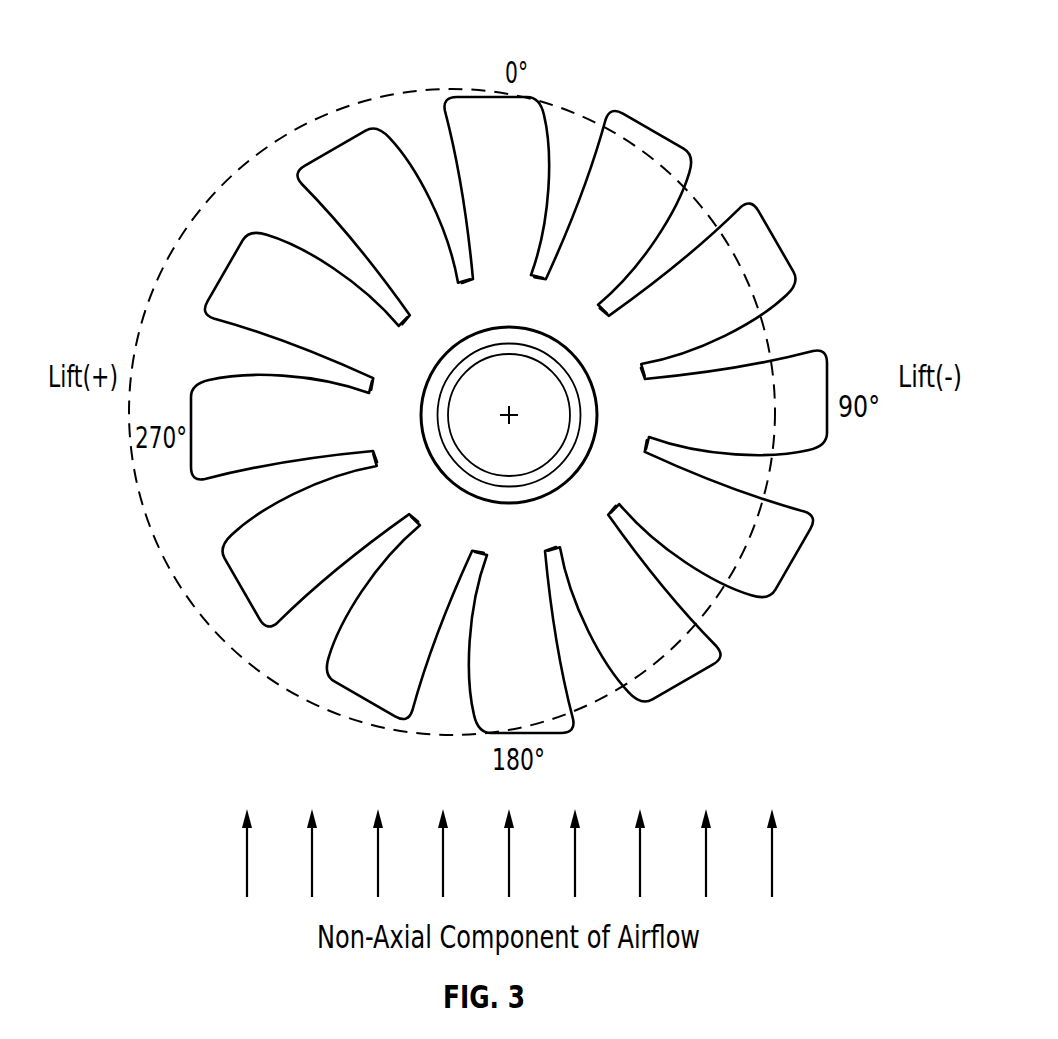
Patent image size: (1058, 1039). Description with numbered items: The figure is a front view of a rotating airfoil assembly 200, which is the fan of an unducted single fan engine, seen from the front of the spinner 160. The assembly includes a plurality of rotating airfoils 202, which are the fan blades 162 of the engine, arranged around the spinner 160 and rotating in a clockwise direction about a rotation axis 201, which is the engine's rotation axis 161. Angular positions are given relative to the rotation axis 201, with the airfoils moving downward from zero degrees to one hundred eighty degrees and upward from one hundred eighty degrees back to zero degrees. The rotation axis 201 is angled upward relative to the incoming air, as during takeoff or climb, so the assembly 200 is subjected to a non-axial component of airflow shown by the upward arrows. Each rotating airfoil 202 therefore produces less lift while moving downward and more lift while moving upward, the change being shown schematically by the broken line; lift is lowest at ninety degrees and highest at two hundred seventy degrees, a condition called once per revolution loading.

The rotating airfoil assembly 200 is at (125, 121).
The rotating airfoil 202 is at (437, 415).
The fan blade 162 is at (250, 280).
The rotation axis 201 is at (464, 354).
The rotation axis 161 is at (505, 411).
The spinner 160 is at (535, 377).